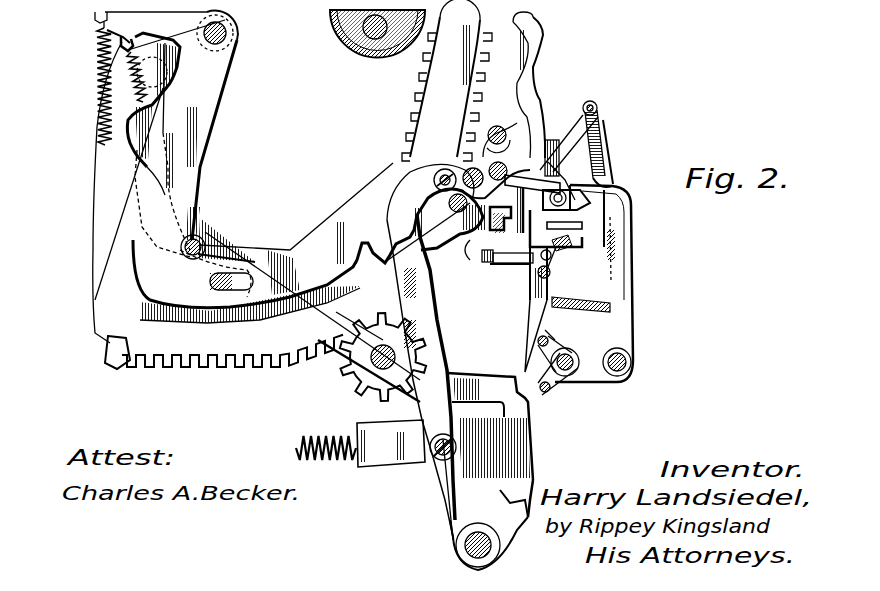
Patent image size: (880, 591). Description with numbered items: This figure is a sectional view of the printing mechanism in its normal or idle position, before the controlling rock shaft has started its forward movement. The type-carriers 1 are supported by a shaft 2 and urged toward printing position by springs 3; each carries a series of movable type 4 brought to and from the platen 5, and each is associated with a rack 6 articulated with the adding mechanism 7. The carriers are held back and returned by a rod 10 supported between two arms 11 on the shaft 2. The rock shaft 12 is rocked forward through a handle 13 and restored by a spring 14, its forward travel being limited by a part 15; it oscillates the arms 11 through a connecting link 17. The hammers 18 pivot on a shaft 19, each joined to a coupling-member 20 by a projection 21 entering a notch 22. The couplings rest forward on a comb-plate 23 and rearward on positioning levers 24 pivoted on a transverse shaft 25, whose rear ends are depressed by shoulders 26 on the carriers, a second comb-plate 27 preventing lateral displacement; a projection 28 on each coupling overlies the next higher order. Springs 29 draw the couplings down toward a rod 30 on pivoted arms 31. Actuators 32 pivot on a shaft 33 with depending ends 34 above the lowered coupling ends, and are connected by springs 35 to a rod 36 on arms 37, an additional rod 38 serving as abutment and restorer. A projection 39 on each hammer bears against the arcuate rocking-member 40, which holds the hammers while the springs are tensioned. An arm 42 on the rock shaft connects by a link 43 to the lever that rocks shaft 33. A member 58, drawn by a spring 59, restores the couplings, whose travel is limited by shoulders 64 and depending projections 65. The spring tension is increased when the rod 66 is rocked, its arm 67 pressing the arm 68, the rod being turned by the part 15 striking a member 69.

The type-carrier 1 is at (308, 265).
The shaft 2 is at (223, 38).
The spring 3 is at (130, 42).
The movable type 4 is at (430, 78).
The platen 5 is at (352, 50).
The rack 6 is at (205, 320).
The adding mechanism 7 is at (360, 367).
The rod 10 is at (205, 246).
The arm 11 is at (200, 240).
The rock shaft 12 is at (466, 548).
The handle 13 is at (537, 437).
The spring 14 is at (312, 434).
The part 15 is at (490, 426).
The connecting link 17 is at (297, 307).
The hammer 18 is at (540, 43).
The shaft 19 is at (498, 128).
The coupling-member 20 is at (549, 218).
The projection 21 is at (500, 242).
The notch 22 is at (490, 232).
The comb-plate 23 is at (600, 137).
The positioning lever 24 is at (518, 263).
The transverse shaft 25 is at (459, 199).
The shoulder 26 is at (360, 248).
The comb-plate 27 is at (538, 272).
The projection 28 is at (566, 205).
The spring 29 is at (566, 250).
The rod 30 is at (552, 272).
The pivoted arm 31 is at (575, 298).
The actuator arm 32 is at (532, 180).
The shaft 33 is at (508, 165).
The depending end 34 is at (495, 223).
The spring 35 is at (605, 162).
The rod 36 is at (597, 108).
The arm 37 is at (569, 143).
The rod 38 is at (552, 140).
The projection 39 is at (561, 181).
The rocking-member 40 is at (566, 205).
The arm 42 is at (452, 460).
The link 43 is at (456, 367).
The member 58 is at (614, 250).
The spring 59 is at (566, 329).
The shoulder 64 is at (582, 223).
The depending projection 65 is at (613, 237).
The rod 66 is at (578, 358).
The arm 67 is at (560, 355).
The arm 68 is at (535, 310).
The member 69 is at (553, 388).